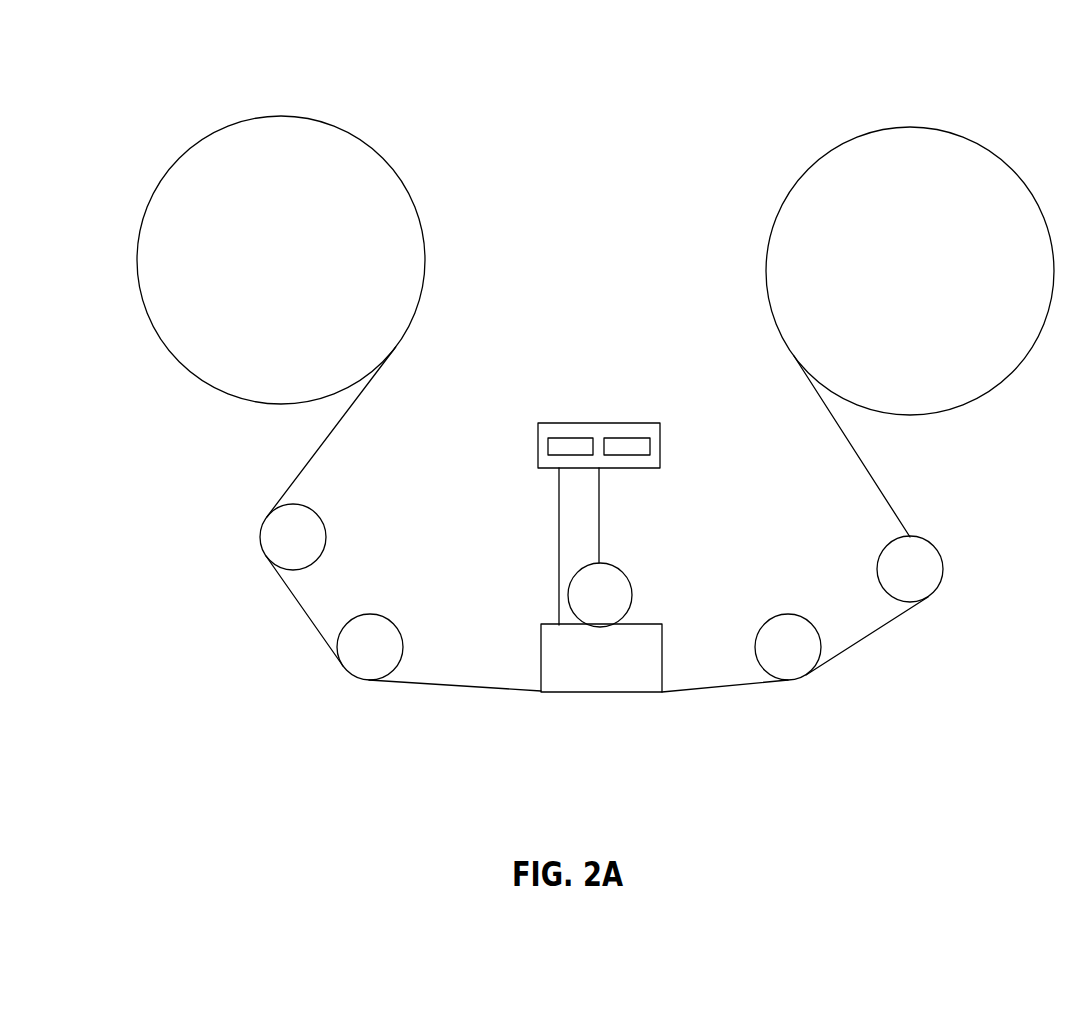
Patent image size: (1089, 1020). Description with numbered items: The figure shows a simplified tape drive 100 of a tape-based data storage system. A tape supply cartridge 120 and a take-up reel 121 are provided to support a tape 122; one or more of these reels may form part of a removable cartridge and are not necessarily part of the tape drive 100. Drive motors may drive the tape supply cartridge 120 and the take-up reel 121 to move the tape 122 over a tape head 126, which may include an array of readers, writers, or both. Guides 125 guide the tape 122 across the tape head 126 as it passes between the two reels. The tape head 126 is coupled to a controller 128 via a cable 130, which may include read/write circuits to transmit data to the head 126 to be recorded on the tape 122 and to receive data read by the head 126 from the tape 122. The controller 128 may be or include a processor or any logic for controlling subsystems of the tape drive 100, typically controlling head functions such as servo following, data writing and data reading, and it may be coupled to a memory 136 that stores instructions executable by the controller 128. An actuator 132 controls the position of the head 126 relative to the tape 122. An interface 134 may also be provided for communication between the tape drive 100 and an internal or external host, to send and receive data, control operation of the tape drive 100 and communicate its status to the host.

The tape drive 100 is at (607, 146).
The tape supply cartridge 120 is at (412, 203).
The take-up reel 121 is at (977, 397).
The tape 122 is at (460, 687).
The guides 125 is at (368, 613).
The tape head 126 is at (662, 657).
The controller 128 is at (598, 423).
The cable 130 is at (559, 590).
The actuator 132 is at (623, 572).
The interface 134 is at (640, 438).
The memory 136 is at (560, 438).